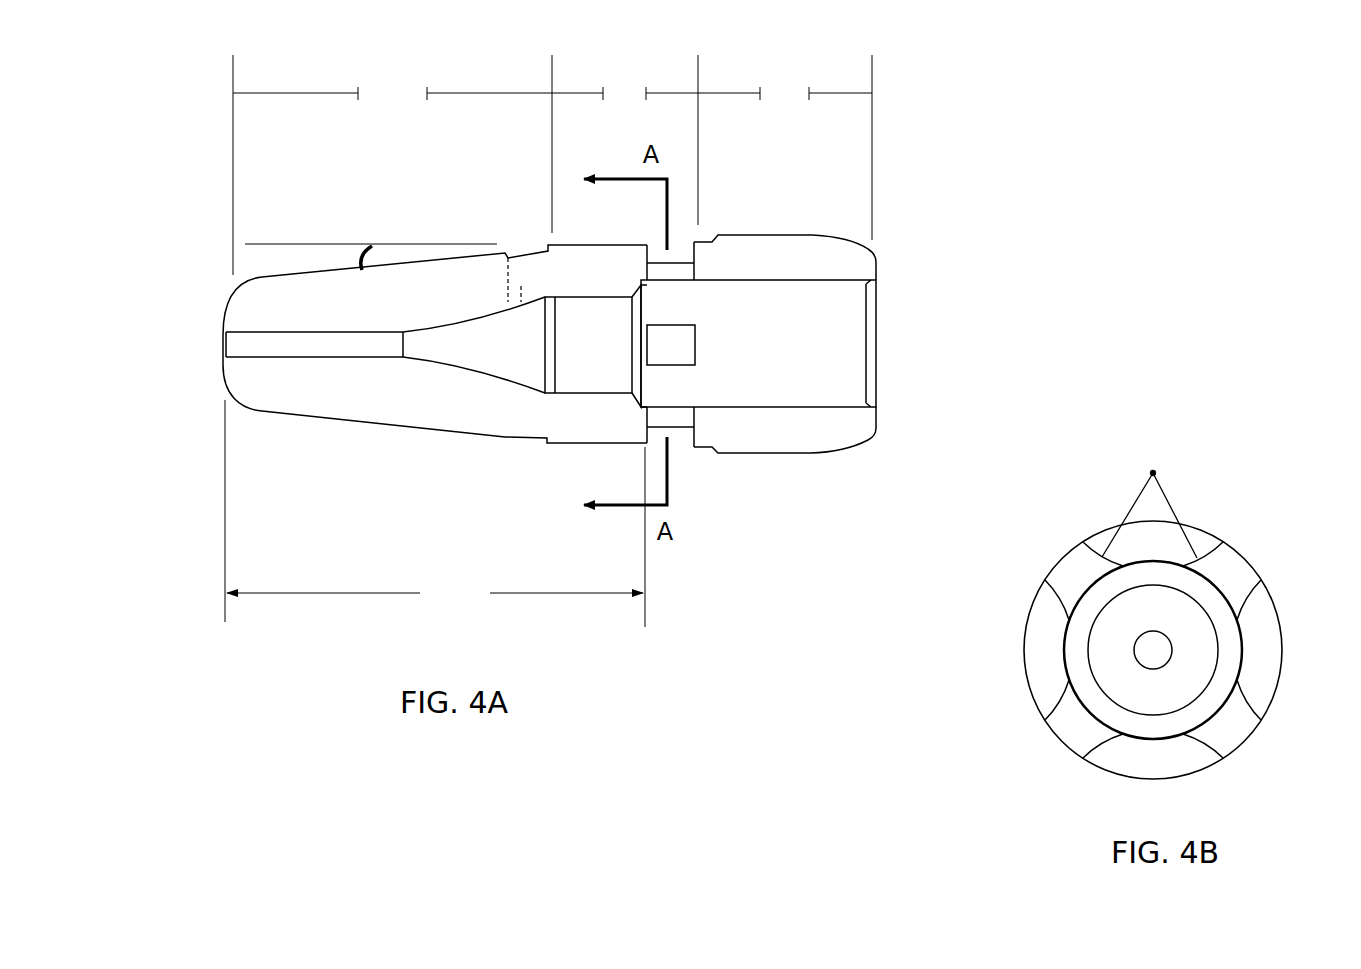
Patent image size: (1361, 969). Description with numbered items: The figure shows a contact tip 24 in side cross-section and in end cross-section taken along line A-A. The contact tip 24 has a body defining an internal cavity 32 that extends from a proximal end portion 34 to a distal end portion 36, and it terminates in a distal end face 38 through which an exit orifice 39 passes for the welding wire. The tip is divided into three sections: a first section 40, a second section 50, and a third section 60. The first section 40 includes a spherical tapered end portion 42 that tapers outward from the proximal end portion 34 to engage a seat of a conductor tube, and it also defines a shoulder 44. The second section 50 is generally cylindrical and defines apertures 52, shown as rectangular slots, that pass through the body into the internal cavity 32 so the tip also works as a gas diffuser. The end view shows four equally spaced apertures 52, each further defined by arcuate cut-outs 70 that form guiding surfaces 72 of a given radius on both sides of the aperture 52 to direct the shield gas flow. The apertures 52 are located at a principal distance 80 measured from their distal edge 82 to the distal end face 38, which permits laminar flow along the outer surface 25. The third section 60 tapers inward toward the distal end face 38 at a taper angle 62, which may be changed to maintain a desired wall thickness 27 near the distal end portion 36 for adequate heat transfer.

In FIG. 4A, the contact tip 24 is at (910, 206).
In FIG. 4B, the contact tip 24 is at (1250, 519).
In FIG. 4A, the outer surface 25 is at (340, 420).
In FIG. 4A, the wall thickness 27 is at (254, 318).
In FIG. 4A, the internal cavity 32 is at (765, 352).
In FIG. 4A, the proximal end portion 34 is at (883, 262).
In FIG. 4A, the distal end portion 36 is at (250, 420).
In FIG. 4A, the distal end face 38 is at (222, 374).
In FIG. 4A, the exit orifice 39 is at (235, 346).
In FIG. 4B, the exit orifice 39 is at (1151, 653).
In FIG. 4A, the first section 40 is at (783, 251).
In FIG. 4A, the spherical tapered end portion 42 is at (850, 446).
In FIG. 4A, the shoulder 44 is at (707, 448).
In FIG. 4A, the second section 50 is at (621, 224).
In FIG. 4A, the aperture 52 is at (672, 332).
In FIG. 4A, the third section 60 is at (392, 165).
In FIG. 4A, the taper angle 62 is at (368, 259).
In FIG. 4B, the arcuate cut-out 70 is at (1043, 656).
In FIG. 4B, the guiding surface 72 is at (1050, 593).
In FIG. 4A, the principal distance 80 is at (435, 513).
In FIG. 4A, the distal edge 82 is at (655, 250).